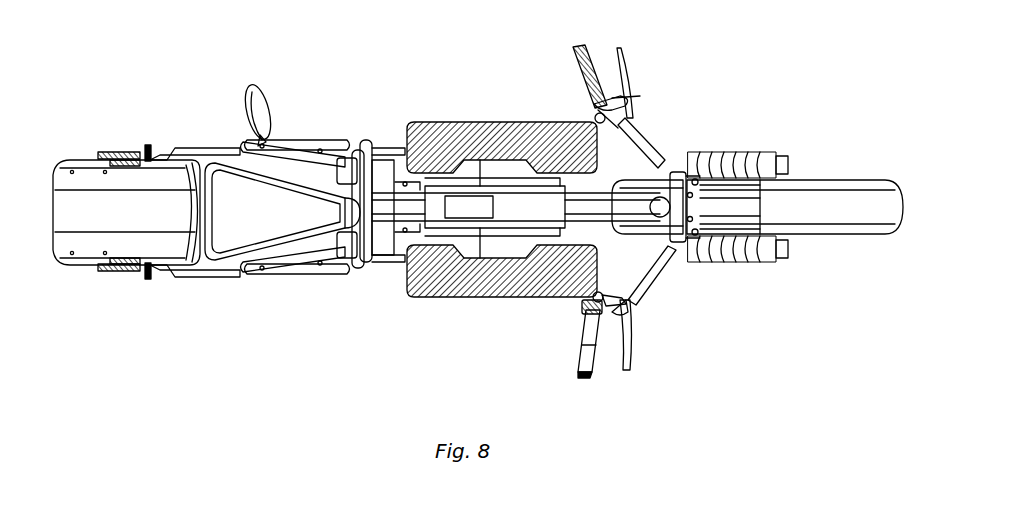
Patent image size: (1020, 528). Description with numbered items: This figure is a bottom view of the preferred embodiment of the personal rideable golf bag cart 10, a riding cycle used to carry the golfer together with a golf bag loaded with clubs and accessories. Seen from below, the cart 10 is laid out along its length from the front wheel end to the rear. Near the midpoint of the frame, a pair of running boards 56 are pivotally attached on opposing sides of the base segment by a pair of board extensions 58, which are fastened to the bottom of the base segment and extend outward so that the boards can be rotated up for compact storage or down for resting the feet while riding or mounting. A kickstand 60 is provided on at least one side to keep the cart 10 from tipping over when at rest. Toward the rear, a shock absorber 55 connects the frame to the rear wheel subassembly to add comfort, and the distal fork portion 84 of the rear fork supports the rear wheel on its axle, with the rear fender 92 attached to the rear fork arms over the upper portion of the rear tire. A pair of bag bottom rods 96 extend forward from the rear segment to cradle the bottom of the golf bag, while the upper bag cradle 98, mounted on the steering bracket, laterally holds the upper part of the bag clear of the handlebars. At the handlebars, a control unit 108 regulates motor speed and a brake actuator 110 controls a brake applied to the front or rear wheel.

The rideable golf bag cart 10 is at (132, 112).
The kickstand 60 is at (268, 110).
The board extensions 58 is at (452, 122).
The running boards 56 is at (500, 122).
The upper bag cradle 98 is at (672, 152).
The rear fender 92 is at (795, 207).
The shock absorber 55 is at (735, 265).
The distal fork portion 84 is at (262, 278).
The bag bottom rods 96 is at (393, 263).
The control unit 108 is at (580, 314).
The brake actuator 110 is at (628, 350).